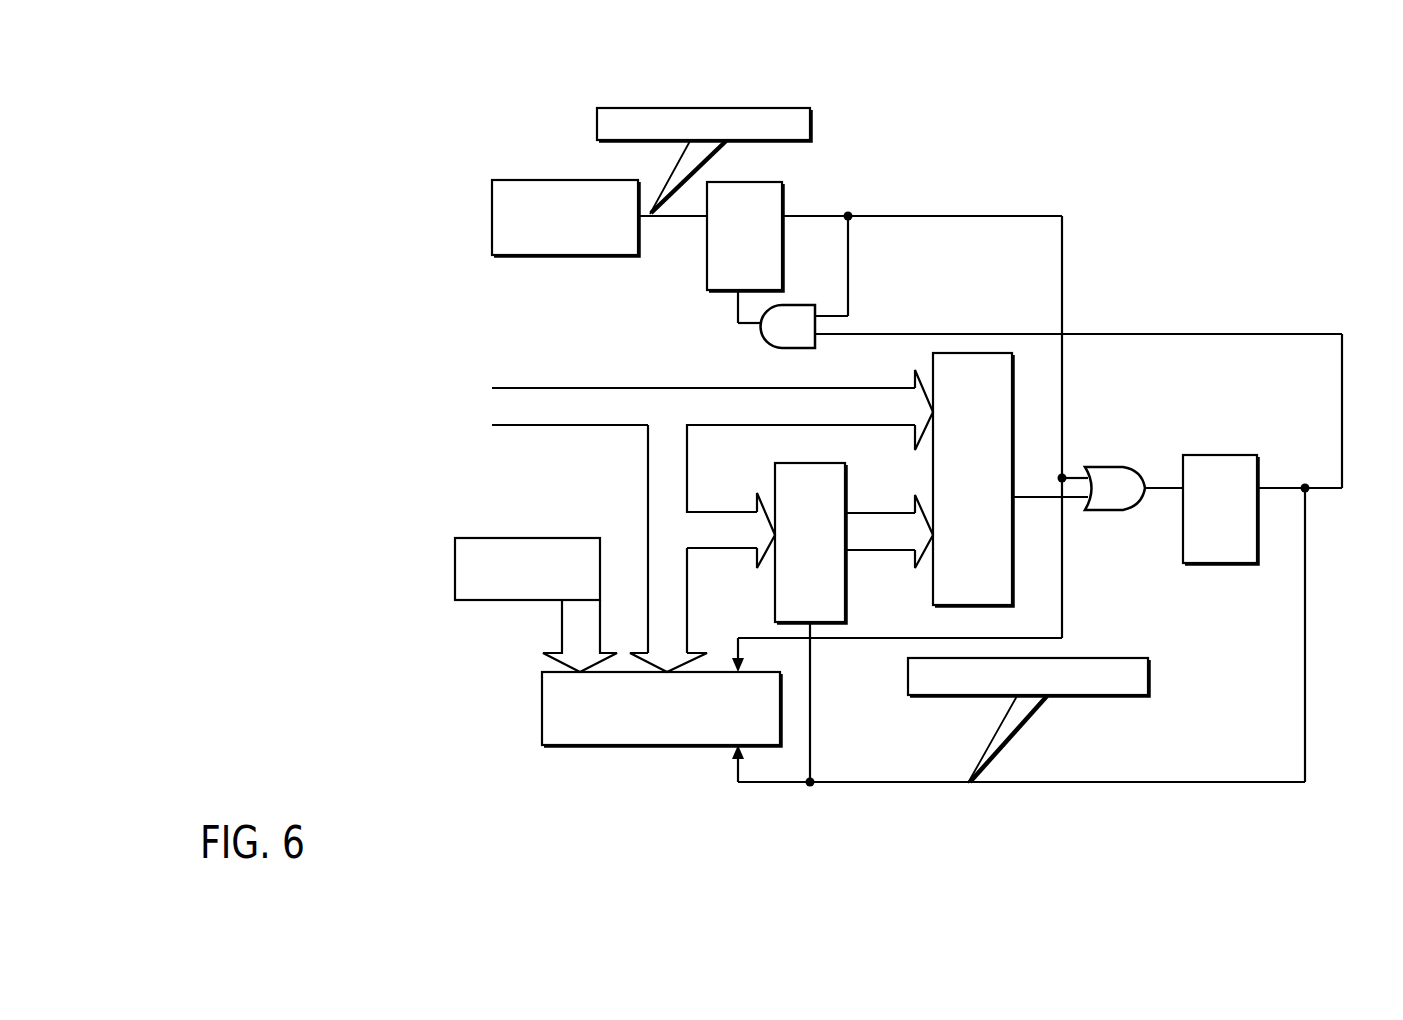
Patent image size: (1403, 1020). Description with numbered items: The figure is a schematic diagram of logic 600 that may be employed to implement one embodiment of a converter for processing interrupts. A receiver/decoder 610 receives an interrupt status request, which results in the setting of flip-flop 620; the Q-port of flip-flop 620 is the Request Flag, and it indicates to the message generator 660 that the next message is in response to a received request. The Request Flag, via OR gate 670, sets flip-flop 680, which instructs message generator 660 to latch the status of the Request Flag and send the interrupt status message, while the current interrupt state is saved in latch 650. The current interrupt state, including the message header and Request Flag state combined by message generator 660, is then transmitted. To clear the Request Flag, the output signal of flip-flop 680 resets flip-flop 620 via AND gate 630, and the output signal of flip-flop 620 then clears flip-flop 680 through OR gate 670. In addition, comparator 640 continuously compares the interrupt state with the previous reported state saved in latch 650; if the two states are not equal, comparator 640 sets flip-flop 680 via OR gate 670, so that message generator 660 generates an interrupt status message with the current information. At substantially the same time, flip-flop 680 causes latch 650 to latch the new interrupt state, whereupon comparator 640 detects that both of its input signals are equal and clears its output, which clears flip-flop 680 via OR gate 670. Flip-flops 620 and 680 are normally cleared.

The status message generation circuit 600 is at (1088, 137).
The receiver/decoder 610 is at (573, 257).
The flip-flop 620 is at (784, 185).
The AND gate 630 is at (757, 336).
The comparator 640 is at (933, 358).
The latch 650 is at (775, 466).
The message generator 660 is at (637, 748).
The OR gate 670 is at (1143, 468).
The flip-flop 680 is at (1190, 565).